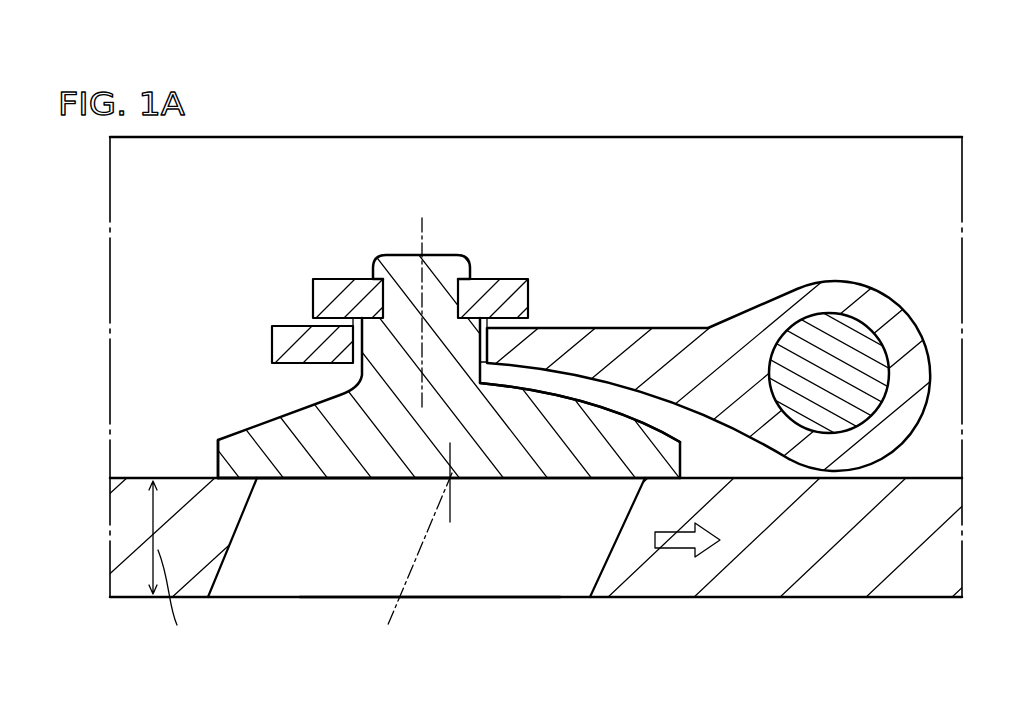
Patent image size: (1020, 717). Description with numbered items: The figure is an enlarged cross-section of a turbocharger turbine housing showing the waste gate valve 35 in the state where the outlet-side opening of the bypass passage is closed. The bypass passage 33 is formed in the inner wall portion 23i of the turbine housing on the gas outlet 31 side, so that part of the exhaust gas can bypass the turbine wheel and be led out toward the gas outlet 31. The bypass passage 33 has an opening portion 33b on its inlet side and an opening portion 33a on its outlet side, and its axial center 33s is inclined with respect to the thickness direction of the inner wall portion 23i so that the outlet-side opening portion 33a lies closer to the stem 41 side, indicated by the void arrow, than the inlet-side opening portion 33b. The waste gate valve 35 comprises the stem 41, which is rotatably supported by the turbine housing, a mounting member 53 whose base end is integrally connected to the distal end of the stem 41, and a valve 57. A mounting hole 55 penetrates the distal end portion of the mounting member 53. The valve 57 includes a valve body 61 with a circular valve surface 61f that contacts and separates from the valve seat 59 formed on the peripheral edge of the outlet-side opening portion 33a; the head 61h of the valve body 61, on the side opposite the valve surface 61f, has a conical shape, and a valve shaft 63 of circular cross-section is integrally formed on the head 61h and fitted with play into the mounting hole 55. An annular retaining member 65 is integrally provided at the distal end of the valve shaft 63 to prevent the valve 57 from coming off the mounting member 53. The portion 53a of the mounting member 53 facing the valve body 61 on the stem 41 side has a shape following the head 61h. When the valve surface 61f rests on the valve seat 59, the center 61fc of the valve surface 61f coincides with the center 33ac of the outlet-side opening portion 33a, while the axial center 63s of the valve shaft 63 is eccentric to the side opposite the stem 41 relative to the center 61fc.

The gas outlet 31 is at (697, 160).
The bypass passage 33 is at (510, 559).
The opening portion on the outlet side 33a is at (387, 488).
The center of the opening portion 33ac is at (452, 478).
The opening portion on the inlet side 33b is at (498, 598).
The axial center of the bypass passage 33s is at (388, 630).
The inner wall portion 23i is at (748, 598).
The waste gate valve 35 is at (541, 362).
The stem 41 is at (822, 425).
The mounting member 53 is at (605, 388).
The portion of the mounting member 53a is at (537, 368).
The mounting hole 55 is at (473, 347).
The valve 57 is at (384, 405).
The valve seat 59 is at (250, 475).
The valve body 61 is at (384, 405).
The valve surface 61f is at (305, 482).
The center of the valve surface 61fc is at (450, 508).
The head 61h is at (613, 405).
The valve shaft 63 is at (398, 342).
The axial center of the valve shaft 63s is at (430, 217).
The retaining member 65 is at (330, 283).